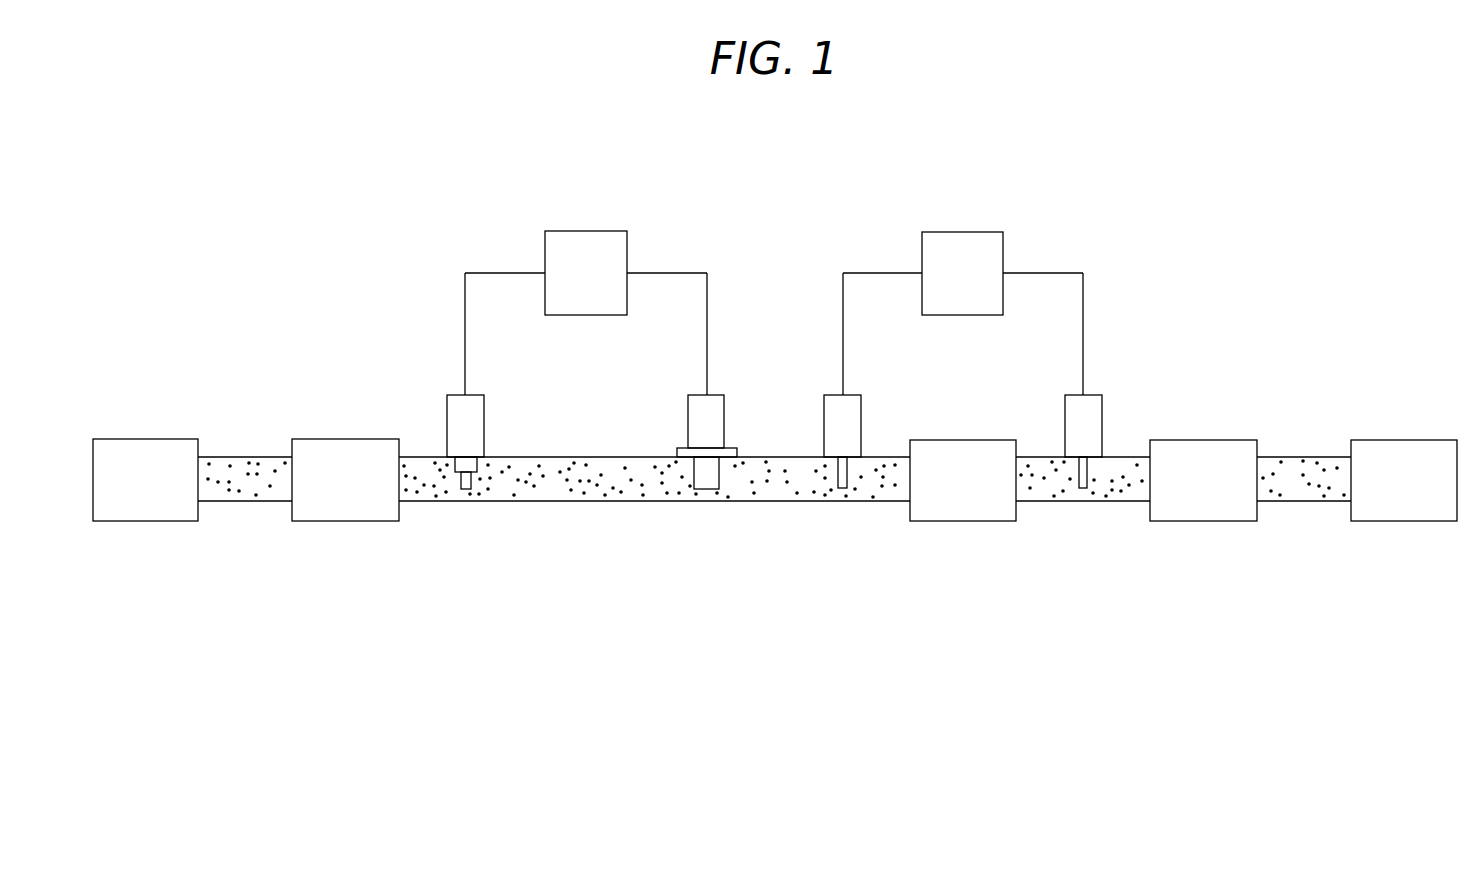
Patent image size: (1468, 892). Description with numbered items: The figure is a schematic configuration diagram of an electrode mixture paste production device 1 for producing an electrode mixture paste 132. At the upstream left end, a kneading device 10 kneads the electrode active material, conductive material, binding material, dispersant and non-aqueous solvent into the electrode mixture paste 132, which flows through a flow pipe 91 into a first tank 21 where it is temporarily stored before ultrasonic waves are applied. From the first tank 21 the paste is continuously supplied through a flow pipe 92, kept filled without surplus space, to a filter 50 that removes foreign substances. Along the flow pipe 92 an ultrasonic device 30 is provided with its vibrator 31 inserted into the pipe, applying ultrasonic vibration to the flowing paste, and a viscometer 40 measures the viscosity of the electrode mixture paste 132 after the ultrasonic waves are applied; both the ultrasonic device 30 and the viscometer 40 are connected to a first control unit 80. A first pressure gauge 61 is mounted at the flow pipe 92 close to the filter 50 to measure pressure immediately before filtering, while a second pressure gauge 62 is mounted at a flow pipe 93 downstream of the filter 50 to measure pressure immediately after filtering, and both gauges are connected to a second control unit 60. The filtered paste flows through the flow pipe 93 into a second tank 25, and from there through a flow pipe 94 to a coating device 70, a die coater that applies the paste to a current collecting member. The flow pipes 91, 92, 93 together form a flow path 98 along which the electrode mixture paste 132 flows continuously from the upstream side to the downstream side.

The electrode mixture paste production device 1 is at (1168, 231).
The kneading device 10 is at (160, 494).
The first tank 21 is at (360, 494).
The second tank 25 is at (1218, 494).
The ultrasonic device 30 is at (465, 381).
The vibrator 31 is at (472, 488).
The viscometer 40 is at (717, 416).
The filter 50 is at (978, 494).
The second control unit 60 is at (977, 289).
The first pressure gauge 61 is at (852, 418).
The second pressure gauge 62 is at (1092, 418).
The coating device 70 is at (1419, 494).
The first control unit 80 is at (601, 289).
The flow pipe 91 is at (245, 502).
The flow pipe 92 is at (643, 502).
The flow pipe 93 is at (1109, 502).
The flow pipe 94 is at (1309, 501).
The flow path 98 is at (787, 506).
The electrode mixture paste 132 is at (243, 467).